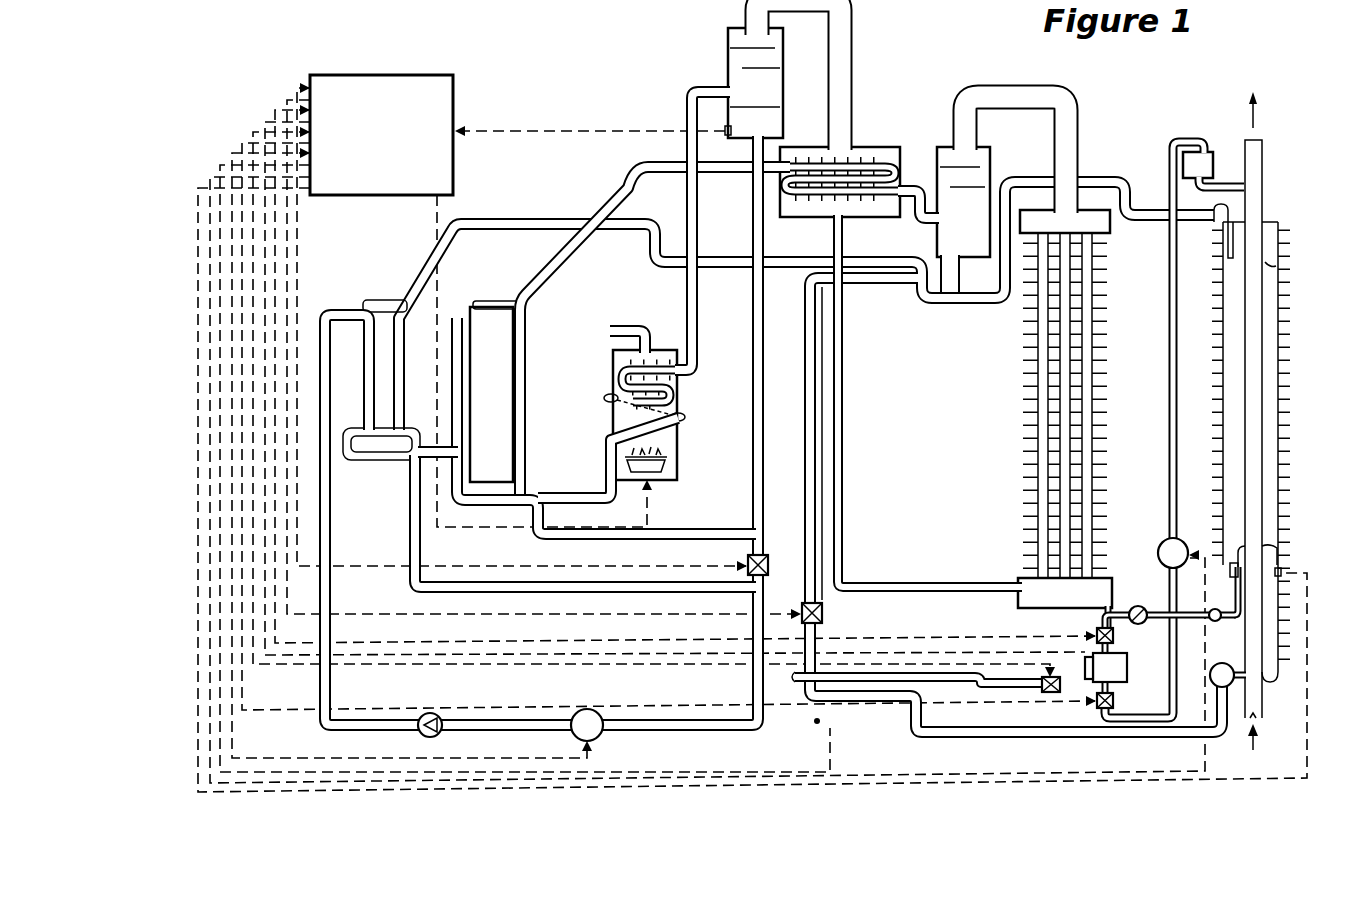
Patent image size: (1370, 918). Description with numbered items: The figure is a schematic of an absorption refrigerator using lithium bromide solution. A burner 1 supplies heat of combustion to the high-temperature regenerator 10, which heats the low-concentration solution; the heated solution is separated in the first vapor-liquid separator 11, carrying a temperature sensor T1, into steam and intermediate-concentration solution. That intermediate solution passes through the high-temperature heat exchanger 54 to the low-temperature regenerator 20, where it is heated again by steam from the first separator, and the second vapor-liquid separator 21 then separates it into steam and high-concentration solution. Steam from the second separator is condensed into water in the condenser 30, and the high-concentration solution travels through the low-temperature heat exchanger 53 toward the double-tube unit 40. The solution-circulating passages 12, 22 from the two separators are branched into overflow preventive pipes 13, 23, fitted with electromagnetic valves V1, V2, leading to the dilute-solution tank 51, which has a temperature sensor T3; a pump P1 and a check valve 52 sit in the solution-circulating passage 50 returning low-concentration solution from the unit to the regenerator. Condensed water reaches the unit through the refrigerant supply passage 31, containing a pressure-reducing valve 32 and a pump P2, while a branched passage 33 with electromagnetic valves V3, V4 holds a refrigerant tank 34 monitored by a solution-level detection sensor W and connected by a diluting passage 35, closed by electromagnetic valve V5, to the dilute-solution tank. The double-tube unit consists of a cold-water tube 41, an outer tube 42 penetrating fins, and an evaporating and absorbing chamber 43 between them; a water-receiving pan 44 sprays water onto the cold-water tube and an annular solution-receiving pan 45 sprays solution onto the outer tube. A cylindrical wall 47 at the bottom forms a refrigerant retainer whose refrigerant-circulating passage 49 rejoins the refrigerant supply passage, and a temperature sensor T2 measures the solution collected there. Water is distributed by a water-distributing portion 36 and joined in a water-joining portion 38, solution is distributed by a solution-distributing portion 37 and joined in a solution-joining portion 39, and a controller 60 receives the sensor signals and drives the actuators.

The burner 1 is at (668, 468).
The high-temperature regenerator 10 is at (612, 368).
The first vapor-liquid separator 11 is at (728, 62).
The solution-circulating passage 12 is at (751, 362).
The overflow preventive pipe 13 is at (751, 608).
The low-temperature regenerator 20 is at (874, 150).
The second vapor-liquid separator 21 is at (938, 158).
The solution-circulating passage 22 is at (806, 368).
The overflow preventive pipe 23 is at (822, 594).
The condenser 30 is at (1022, 376).
The refrigerant supply passage 31 is at (1168, 338).
The pressure-reducing valve 32 is at (1138, 606).
The branched passage 33 is at (1170, 708).
The refrigerant tank 34 is at (1128, 666).
The diluting passage 35 is at (985, 688).
The water-distributing portion 36 is at (1205, 150).
The solution-distributing portion 37 is at (1218, 222).
The water-joining portion 38 is at (1216, 609).
The solution-joining portion 39 is at (1223, 663).
The double-tube unit 40 is at (1280, 203).
The cold-water tube 41 is at (1264, 704).
The outer tube 42 is at (1282, 314).
The evaporating and absorbing chamber 43 is at (1282, 369).
The water-receiving pan 44 is at (1268, 242).
The solution-receiving pan 45 is at (1270, 272).
The cylindrical wall 47 is at (1264, 549).
The refrigerant-circulating passage 49 is at (1190, 620).
The solution-circulating passage 50 is at (992, 740).
The dilute-solution tank 51 is at (752, 690).
The check valve 52 is at (441, 736).
The low-temperature heat exchanger 53 is at (384, 299).
The high-temperature heat exchanger 54 is at (495, 302).
The controller 60 is at (455, 100).
The pump P1 is at (604, 736).
The pump P2 is at (1167, 540).
The temperature sensor T1 is at (726, 135).
The temperature sensor T2 is at (1283, 572).
The temperature sensor T3 is at (820, 722).
The electromagnetic valve V1 is at (769, 566).
The electromagnetic valve V2 is at (823, 615).
The electromagnetic valve V3 is at (1096, 634).
The electromagnetic valve V4 is at (1096, 704).
The electromagnetic valve V5 is at (1041, 683).
The solution-level detection sensor W is at (1084, 666).